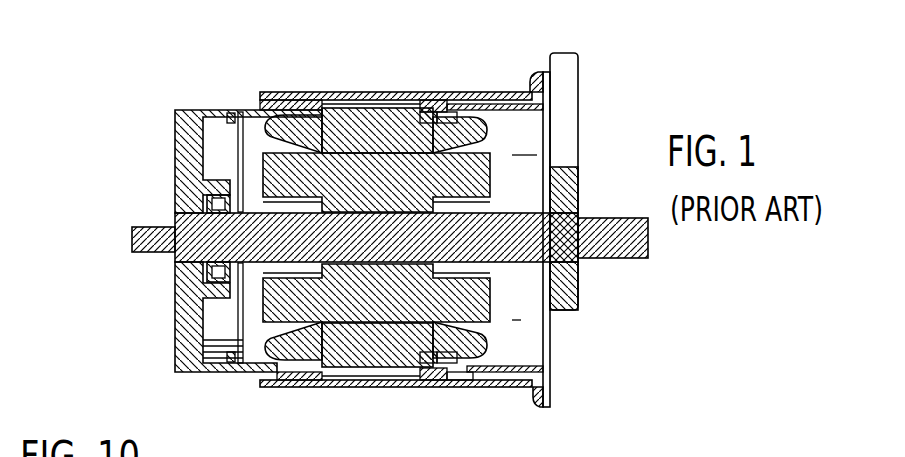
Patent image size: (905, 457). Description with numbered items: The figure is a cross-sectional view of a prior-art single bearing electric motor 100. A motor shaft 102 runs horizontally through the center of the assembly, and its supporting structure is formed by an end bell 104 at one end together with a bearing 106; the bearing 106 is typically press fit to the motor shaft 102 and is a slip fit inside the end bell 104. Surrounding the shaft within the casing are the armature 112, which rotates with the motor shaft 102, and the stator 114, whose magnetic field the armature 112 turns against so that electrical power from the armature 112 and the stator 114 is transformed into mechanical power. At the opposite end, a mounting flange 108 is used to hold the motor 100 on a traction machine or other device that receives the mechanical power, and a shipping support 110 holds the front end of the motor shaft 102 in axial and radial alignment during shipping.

The single bearing electric motor 100 is at (521, 28).
The motor shaft 102 is at (520, 263).
The end bell 104 is at (173, 168).
The bearing 106 is at (207, 278).
The mounting flange 108 is at (552, 392).
The shipping support 110 is at (587, 144).
The armature 112 is at (492, 307).
The stator 114 is at (484, 366).